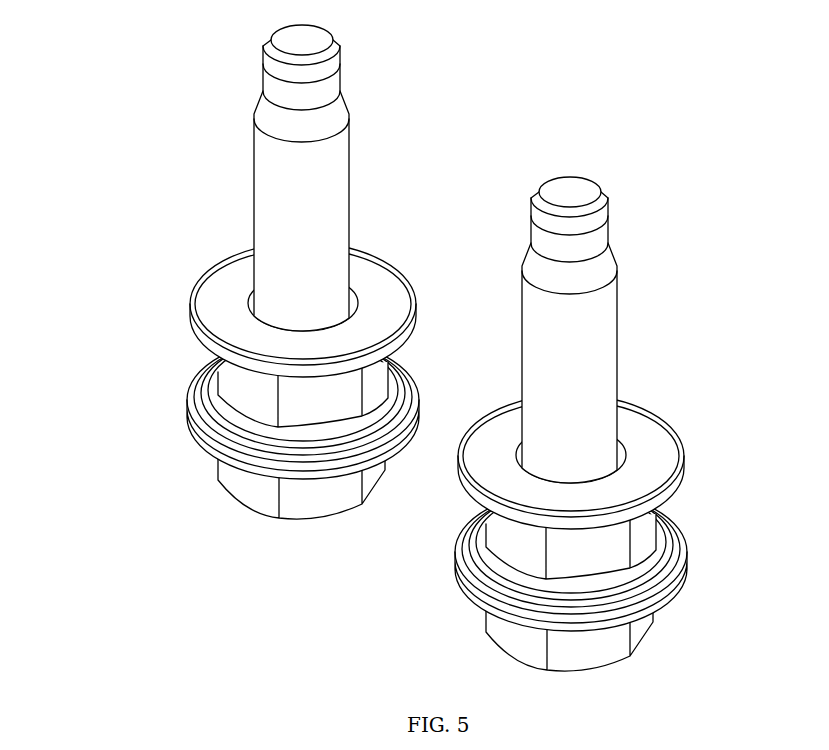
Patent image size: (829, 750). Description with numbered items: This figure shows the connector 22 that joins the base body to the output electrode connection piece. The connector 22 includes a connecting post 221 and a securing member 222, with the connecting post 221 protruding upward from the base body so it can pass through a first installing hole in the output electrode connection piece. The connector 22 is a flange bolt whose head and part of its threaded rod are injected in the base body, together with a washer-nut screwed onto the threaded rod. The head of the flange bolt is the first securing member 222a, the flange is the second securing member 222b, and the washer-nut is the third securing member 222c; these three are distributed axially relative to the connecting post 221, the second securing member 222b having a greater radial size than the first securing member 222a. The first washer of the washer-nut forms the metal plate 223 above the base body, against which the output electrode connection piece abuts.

The connector 22 is at (114, 149).
The connecting post 221 is at (256, 183).
The securing member 222 is at (740, 493).
The first securing member 222a is at (305, 518).
The second securing member 222b is at (200, 437).
The third securing member 222c is at (221, 379).
The metal plate 223 is at (208, 291).